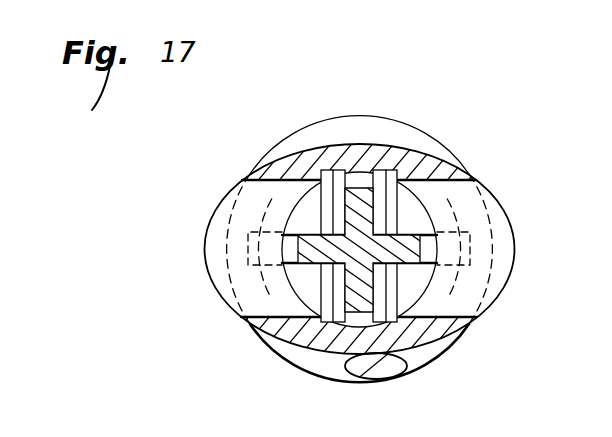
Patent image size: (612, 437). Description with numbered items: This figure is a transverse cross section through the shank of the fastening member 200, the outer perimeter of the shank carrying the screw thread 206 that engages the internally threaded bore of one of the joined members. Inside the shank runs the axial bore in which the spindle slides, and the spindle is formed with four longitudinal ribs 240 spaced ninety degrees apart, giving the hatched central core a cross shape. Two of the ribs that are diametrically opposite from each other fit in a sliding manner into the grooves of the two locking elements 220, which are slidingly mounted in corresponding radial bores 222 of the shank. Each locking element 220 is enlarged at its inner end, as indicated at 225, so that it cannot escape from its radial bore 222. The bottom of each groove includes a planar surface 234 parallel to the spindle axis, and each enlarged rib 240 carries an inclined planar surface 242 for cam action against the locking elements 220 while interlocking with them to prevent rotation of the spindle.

The fastening member 200 is at (401, 146).
The screw thread 206 is at (318, 357).
The locking elements 220 is at (212, 291).
The radial bores 222 is at (252, 185).
The enlarged inner end 225 is at (292, 333).
The planar surface 234 is at (430, 248).
The longitudinal ribs 240 is at (389, 212).
The planar surface 242 is at (291, 247).